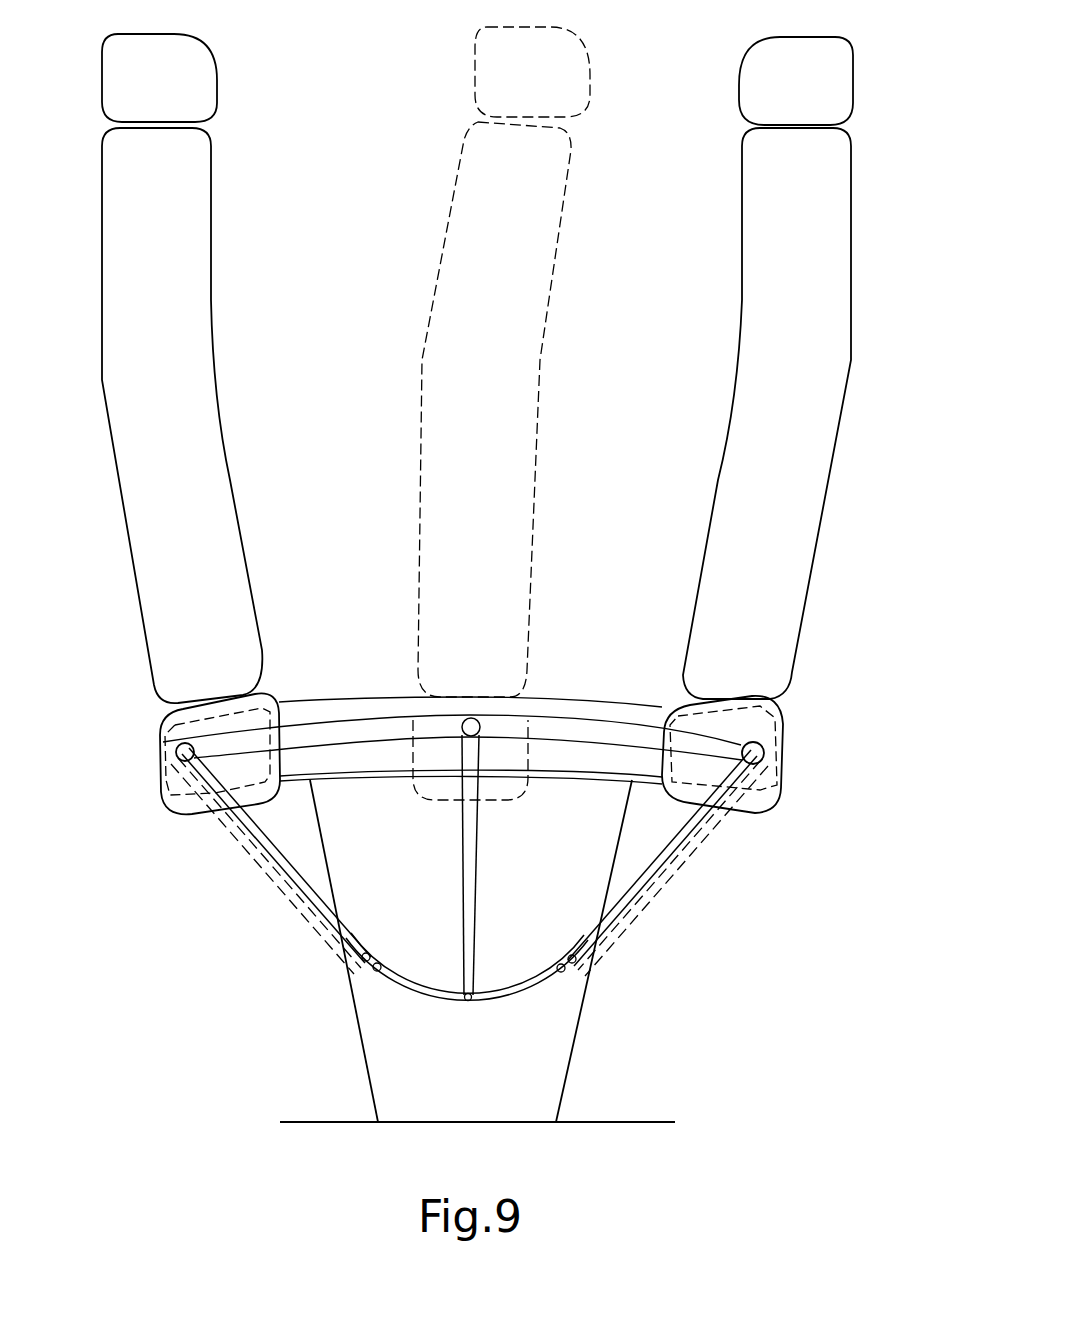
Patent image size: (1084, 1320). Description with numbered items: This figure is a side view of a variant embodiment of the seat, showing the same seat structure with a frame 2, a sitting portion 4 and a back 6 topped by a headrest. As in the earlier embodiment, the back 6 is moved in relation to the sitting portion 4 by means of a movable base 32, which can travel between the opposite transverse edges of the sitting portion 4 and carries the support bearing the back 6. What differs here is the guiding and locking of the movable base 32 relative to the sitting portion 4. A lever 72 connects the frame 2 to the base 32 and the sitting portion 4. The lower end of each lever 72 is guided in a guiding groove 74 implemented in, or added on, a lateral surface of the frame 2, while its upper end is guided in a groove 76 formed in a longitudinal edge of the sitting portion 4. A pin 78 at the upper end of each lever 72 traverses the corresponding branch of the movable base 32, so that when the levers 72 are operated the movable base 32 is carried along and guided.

The frame 2 is at (550, 1032).
The sitting portion 4 is at (571, 705).
The back 6 is at (823, 300).
The movable base 32 is at (763, 742).
The lever 72 is at (472, 856).
The guiding groove 74 is at (428, 990).
The groove 76 is at (333, 722).
The pin 78 is at (469, 697).